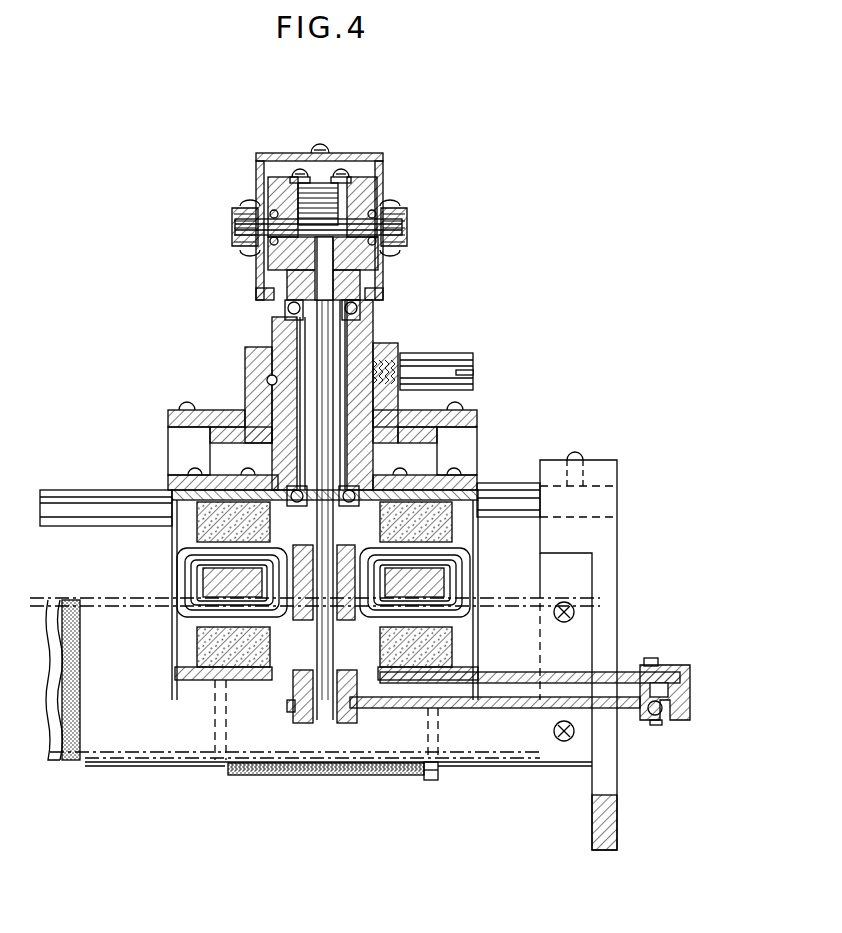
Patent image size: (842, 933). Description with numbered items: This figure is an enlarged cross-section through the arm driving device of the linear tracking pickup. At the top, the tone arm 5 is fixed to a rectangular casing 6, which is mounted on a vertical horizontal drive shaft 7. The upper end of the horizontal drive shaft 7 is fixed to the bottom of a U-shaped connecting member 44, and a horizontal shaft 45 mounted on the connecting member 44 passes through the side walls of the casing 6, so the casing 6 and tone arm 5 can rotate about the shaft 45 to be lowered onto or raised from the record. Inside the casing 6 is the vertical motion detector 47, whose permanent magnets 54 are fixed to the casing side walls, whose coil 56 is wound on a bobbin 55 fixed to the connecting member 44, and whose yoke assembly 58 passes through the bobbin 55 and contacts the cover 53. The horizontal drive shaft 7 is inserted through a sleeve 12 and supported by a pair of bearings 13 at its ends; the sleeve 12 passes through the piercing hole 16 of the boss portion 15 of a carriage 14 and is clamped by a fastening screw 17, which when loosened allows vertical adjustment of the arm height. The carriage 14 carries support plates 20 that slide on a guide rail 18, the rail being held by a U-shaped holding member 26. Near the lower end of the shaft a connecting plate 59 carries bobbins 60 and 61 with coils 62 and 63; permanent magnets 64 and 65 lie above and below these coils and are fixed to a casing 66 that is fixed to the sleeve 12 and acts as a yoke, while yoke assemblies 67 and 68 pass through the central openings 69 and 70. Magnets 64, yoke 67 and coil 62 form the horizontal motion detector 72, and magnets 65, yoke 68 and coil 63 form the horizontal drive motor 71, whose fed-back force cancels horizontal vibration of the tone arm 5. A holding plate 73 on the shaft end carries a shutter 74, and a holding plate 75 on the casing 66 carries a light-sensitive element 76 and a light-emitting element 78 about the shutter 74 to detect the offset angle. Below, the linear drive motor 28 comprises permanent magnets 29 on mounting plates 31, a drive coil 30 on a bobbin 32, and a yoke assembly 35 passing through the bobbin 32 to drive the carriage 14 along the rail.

The tone arm 5 is at (378, 190).
The casing 6 is at (380, 278).
The horizontal drive shaft 7 is at (340, 352).
The sleeve 12 is at (366, 325).
The bearings 13 is at (345, 308).
The carriage 14 is at (222, 412).
The boss portion 15 is at (268, 352).
The piercing hole 16 is at (268, 380).
The fastening screw 17 is at (435, 368).
The guide rail 18 is at (506, 490).
The support plates 20 is at (180, 442).
The holding member 26 is at (603, 575).
The linear drive motor 28 is at (390, 782).
The permanent magnets 29 is at (75, 750).
The drive coil 30 is at (310, 778).
The mounting plates 31 is at (118, 740).
The bobbin 32 is at (440, 770).
The yoke assembly 35 is at (50, 760).
The connecting member 44 is at (280, 196).
The shaft 45 is at (262, 262).
The vertical motion detector 47 is at (338, 150).
The cover 53 is at (286, 156).
The permanent magnets 54 is at (262, 160).
The bobbin 55 is at (348, 168).
The coil 56 is at (303, 165).
The yoke assembly 58 is at (320, 148).
The connecting plate 59 is at (302, 600).
The bobbin 60 is at (205, 578).
The bobbin 61 is at (448, 575).
The coil 62 is at (185, 600).
The coil 63 is at (462, 600).
The permanent magnets 64 is at (215, 520).
The permanent magnets 65 is at (430, 520).
The casing 66 is at (205, 674).
The yoke assembly 67 is at (240, 580).
The yoke assembly 68 is at (420, 578).
The central opening 69 is at (252, 674).
The central opening 70 is at (385, 590).
The horizontal drive motor 71 is at (485, 555).
The horizontal motion detector 72 is at (160, 560).
The holding plate 73 is at (520, 710).
The shutter 74 is at (675, 668).
The holding plate 75 is at (556, 676).
The light-sensitive element 76 is at (651, 658).
The light-emitting element 78 is at (672, 704).